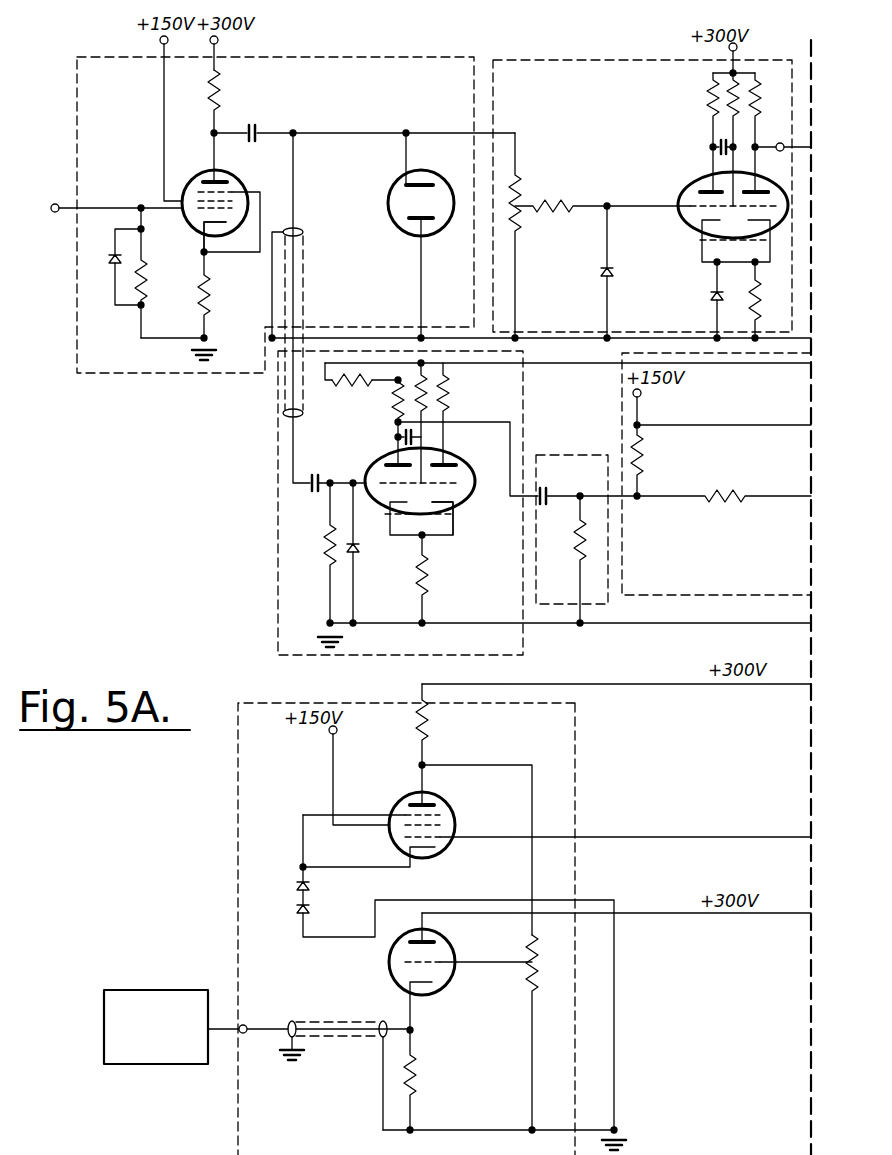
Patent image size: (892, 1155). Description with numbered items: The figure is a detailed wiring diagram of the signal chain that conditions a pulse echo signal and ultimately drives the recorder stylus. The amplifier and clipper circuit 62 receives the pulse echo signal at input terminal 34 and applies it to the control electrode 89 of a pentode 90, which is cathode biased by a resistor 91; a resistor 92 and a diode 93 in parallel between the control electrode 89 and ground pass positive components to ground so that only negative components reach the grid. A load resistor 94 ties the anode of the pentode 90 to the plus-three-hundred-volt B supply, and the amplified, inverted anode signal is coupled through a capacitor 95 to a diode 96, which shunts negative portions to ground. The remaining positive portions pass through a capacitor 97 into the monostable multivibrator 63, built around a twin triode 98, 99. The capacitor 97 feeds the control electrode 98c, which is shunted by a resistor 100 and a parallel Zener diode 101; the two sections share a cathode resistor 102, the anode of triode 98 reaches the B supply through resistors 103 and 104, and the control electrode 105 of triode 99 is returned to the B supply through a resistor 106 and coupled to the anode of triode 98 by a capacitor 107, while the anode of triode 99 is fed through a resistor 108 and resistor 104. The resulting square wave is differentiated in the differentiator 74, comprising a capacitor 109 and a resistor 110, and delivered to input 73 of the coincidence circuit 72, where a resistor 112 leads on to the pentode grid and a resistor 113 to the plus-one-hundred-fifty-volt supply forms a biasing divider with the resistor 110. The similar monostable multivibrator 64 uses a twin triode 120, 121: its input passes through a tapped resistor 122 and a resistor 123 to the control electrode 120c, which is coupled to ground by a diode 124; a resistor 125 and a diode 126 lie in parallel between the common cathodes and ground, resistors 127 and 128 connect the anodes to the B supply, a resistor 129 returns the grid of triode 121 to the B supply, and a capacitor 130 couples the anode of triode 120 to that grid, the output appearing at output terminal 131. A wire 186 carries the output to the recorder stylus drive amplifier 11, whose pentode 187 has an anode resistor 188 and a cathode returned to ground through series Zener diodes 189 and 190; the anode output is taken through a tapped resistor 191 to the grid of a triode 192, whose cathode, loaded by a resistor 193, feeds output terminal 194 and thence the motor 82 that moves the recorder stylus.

The recorder stylus drive amplifier 11 is at (243, 772).
The input terminal 34 is at (55, 204).
The amplifier and clipper circuit 62 is at (80, 98).
The monostable multivibrator 63 is at (274, 530).
The monostable multivibrator 64 is at (528, 62).
The coincidence circuit 72 is at (758, 595).
The input terminal 73 is at (637, 500).
The differentiator 74 is at (575, 455).
The motor 82 is at (158, 988).
The control electrode 89 is at (194, 226).
The pentode 90 is at (202, 176).
The resistor 91 is at (201, 290).
The resistor 92 is at (153, 280).
The diode 93 is at (112, 270).
The load resistor 94 is at (221, 92).
The capacitor 95 is at (254, 124).
The diode 96 is at (404, 232).
The capacitor 97 is at (316, 472).
The triode 98 is at (380, 457).
The control electrode 98c is at (370, 506).
The triode 99 is at (462, 460).
The resistor 100 is at (326, 545).
The Zener diode 101 is at (364, 553).
The resistor 102 is at (430, 576).
The resistor 103 is at (392, 396).
The resistor 104 is at (347, 386).
The control electrode 105 is at (469, 507).
The resistor 106 is at (432, 382).
The capacitor 107 is at (402, 437).
The resistor 108 is at (451, 400).
The capacitor 109 is at (549, 484).
The resistor 110 is at (575, 556).
The resistor 112 is at (730, 493).
The resistor 113 is at (646, 456).
The triode 120 is at (700, 184).
The control electrode 120c is at (698, 222).
The triode 121 is at (776, 180).
The resistor 122 is at (520, 192).
The resistor 123 is at (556, 214).
The diode 124 is at (600, 276).
The resistor 125 is at (766, 302).
The diode 126 is at (709, 297).
The resistor 127 is at (707, 94).
The resistor 128 is at (762, 98).
The resistor 129 is at (726, 90).
The capacitor 130 is at (716, 140).
The output terminal 131 is at (781, 142).
The wire 186 is at (743, 838).
The pentode 187 is at (447, 813).
The resistor 188 is at (418, 726).
The Zener diode 189 is at (297, 886).
The Zener diode 190 is at (297, 910).
The resistor 191 is at (538, 976).
The triode 192 is at (388, 966).
The load resistor 193 is at (414, 1078).
The output terminal 194 is at (246, 1024).